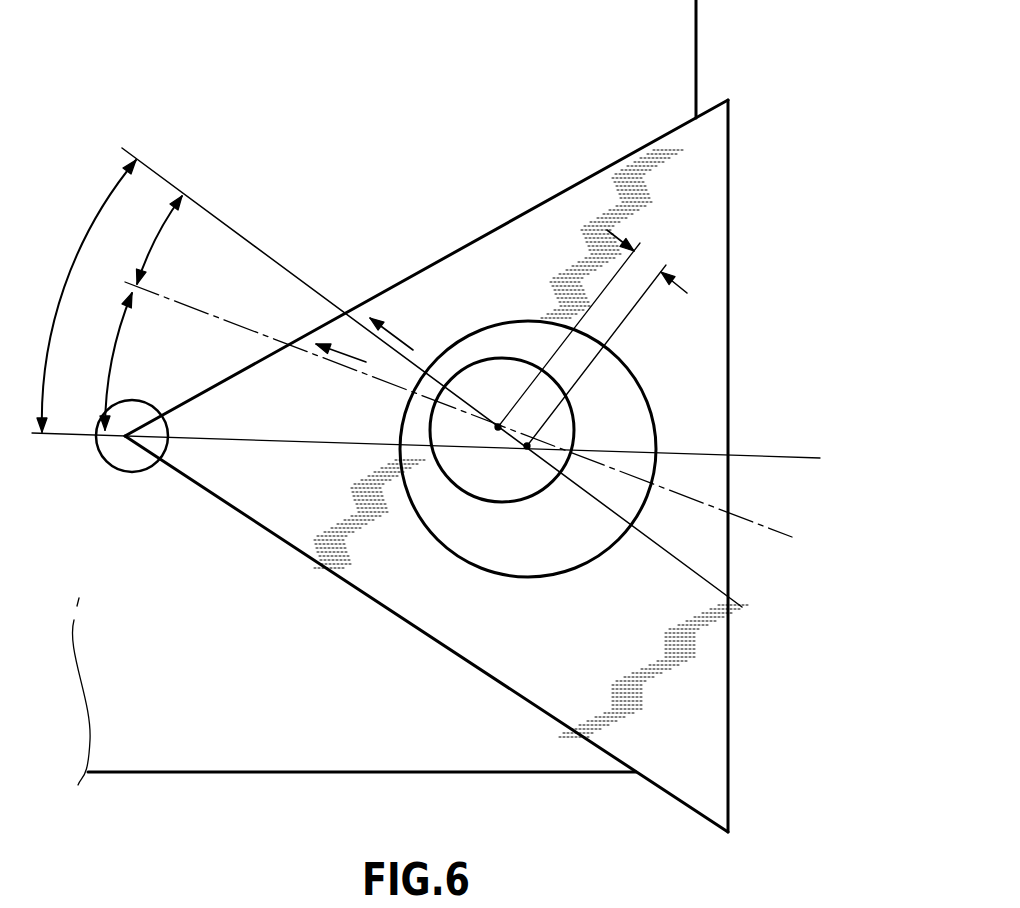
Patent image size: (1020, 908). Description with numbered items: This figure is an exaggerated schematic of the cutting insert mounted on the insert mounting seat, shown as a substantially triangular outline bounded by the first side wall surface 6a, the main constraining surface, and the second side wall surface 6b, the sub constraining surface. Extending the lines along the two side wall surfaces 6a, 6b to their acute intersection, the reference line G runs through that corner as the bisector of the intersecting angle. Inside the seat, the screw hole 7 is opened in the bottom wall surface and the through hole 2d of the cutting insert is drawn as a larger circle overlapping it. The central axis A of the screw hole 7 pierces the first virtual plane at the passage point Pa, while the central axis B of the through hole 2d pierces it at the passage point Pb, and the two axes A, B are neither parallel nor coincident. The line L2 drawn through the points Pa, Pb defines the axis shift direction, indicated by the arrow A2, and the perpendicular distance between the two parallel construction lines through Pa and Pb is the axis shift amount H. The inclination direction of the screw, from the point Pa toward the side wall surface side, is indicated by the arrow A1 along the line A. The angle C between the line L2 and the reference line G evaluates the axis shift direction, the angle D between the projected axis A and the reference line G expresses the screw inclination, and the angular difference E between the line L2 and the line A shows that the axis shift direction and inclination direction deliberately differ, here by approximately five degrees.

The first side wall surface 6a is at (514, 215).
The second side wall surface 6b is at (292, 545).
The screw hole 7 is at (496, 358).
The through hole 2d is at (577, 565).
The passage point Pa is at (496, 427).
The passage point Pb is at (527, 448).
The line L2 is at (160, 177).
The central axis A is at (192, 307).
The arrow A1 is at (341, 346).
The arrow A2 is at (397, 332).
The central axis B is at (545, 444).
The reference line G is at (792, 458).
The axis shift amount H is at (601, 338).
The angle C is at (86, 296).
The angle D is at (112, 361).
The angular difference E is at (160, 240).